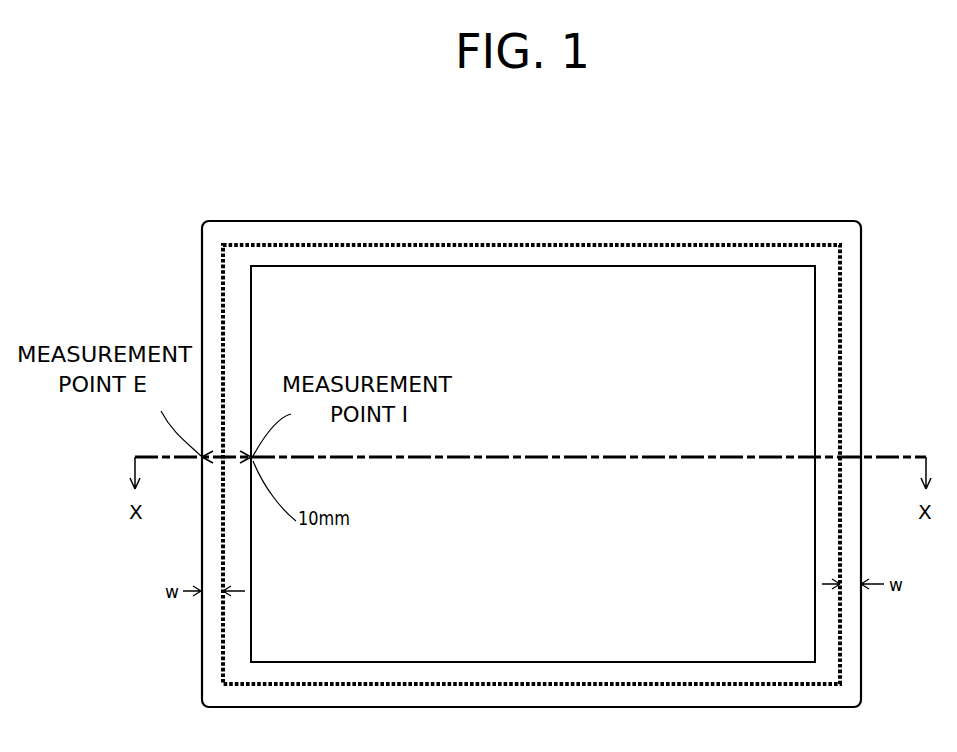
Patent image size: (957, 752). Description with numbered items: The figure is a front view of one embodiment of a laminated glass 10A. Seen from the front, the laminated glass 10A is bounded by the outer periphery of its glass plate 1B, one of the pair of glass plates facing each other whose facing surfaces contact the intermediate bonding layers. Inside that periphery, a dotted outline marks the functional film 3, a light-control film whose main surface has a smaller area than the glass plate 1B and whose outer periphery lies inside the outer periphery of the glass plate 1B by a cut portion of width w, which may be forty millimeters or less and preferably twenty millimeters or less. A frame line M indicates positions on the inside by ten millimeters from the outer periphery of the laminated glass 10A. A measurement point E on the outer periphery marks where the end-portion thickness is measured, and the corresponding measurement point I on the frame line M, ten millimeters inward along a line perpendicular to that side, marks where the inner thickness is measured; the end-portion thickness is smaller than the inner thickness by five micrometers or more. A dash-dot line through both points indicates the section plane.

The laminated glass 10A is at (541, 415).
The glass plate 1B is at (851, 247).
The functional film 3 is at (825, 326).
The frame line M is at (250, 332).